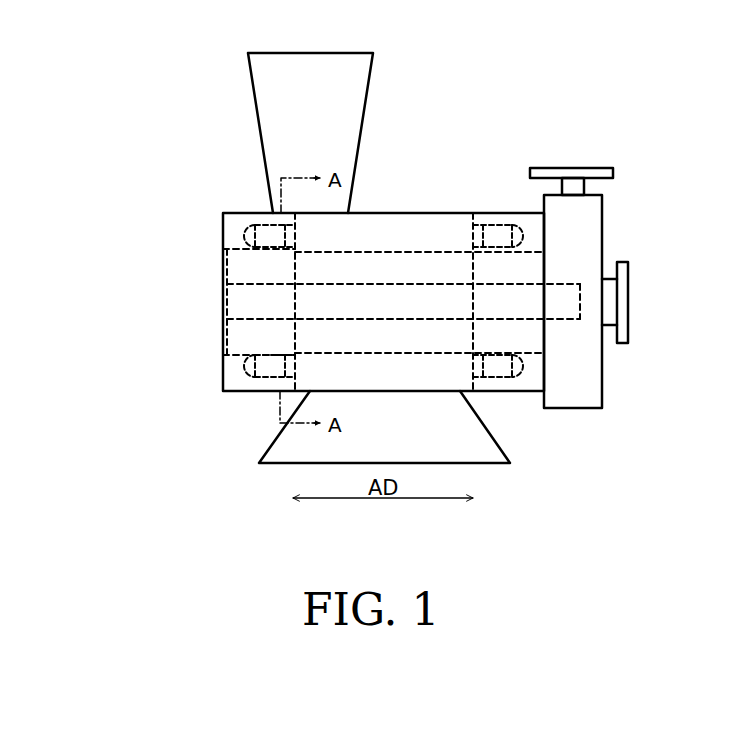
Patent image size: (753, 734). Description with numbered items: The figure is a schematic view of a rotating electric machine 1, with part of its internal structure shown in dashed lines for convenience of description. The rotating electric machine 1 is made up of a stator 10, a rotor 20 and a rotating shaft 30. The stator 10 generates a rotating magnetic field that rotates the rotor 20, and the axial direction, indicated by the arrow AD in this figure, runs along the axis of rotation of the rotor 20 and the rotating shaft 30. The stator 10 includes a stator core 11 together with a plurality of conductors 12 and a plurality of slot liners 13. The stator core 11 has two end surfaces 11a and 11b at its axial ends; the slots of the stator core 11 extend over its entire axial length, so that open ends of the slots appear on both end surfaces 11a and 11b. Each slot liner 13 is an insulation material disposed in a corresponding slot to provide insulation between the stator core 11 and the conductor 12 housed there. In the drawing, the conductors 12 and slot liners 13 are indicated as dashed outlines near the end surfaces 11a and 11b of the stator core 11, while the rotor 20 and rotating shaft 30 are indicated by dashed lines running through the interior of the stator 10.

The rotating electric machine 1 is at (108, 58).
The stator 10 is at (419, 210).
The stator core 11 is at (369, 232).
The end surface 11a is at (292, 226).
The end surface 11b is at (474, 223).
The conductor 12 is at (523, 232).
The slot liner 13 is at (476, 244).
The rotor 20 is at (288, 274).
The rotating shaft 30 is at (222, 309).